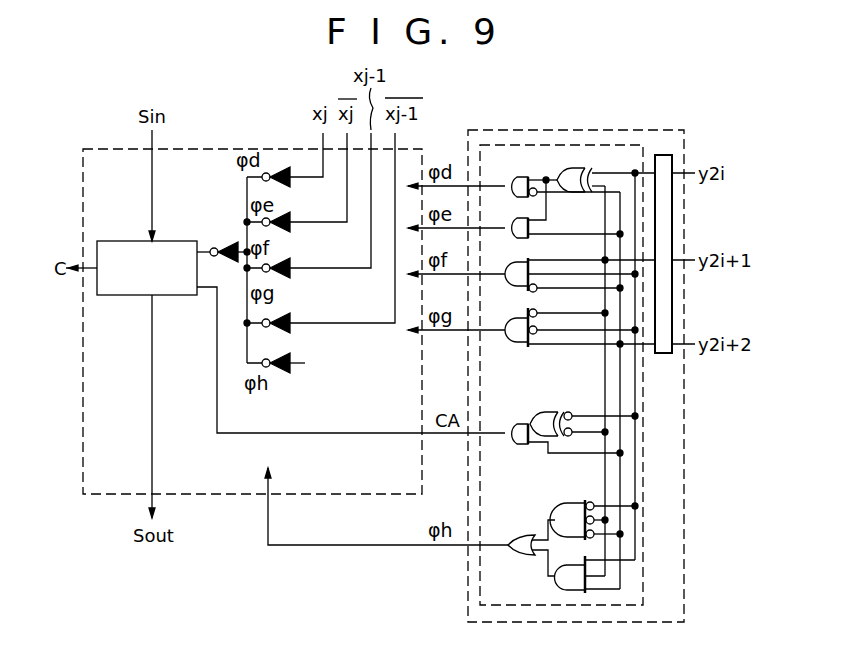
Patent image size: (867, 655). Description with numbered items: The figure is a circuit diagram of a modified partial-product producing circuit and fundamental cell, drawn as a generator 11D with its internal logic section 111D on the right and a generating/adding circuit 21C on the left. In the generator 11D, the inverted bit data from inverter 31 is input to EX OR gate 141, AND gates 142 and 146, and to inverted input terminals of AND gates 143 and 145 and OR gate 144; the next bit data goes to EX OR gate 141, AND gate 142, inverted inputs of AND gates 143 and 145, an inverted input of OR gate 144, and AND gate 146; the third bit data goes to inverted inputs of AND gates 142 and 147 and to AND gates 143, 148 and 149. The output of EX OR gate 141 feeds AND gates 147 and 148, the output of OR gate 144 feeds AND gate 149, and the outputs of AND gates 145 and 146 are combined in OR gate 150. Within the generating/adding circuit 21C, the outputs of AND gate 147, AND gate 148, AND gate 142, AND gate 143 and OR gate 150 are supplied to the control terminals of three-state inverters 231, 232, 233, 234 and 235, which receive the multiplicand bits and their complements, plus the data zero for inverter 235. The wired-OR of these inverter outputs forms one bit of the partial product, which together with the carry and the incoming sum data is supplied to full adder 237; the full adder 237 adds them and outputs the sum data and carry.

The generating/adding circuit 21C is at (203, 149).
The generator 11D is at (497, 130).
The decoder logic section 111D is at (545, 145).
The inverter 31 is at (663, 155).
The full adder 237 is at (176, 241).
The three state inverter 231 is at (288, 186).
The three-state inverter 232 is at (288, 231).
The three-state inverter 233 is at (288, 277).
The inverter 234 is at (288, 332).
The inverter 235 is at (284, 372).
The EX OR gate 141 is at (572, 171).
The AND gate 142 is at (514, 262).
The AND gate 143 is at (506, 342).
The OR gate 144 is at (552, 412).
The AND gate 145 is at (568, 503).
The AND gate 146 is at (556, 594).
The AND gate 147 is at (514, 176).
The AND gate 148 is at (514, 218).
The AND gate 149 is at (514, 446).
The OR gate 150 is at (516, 534).